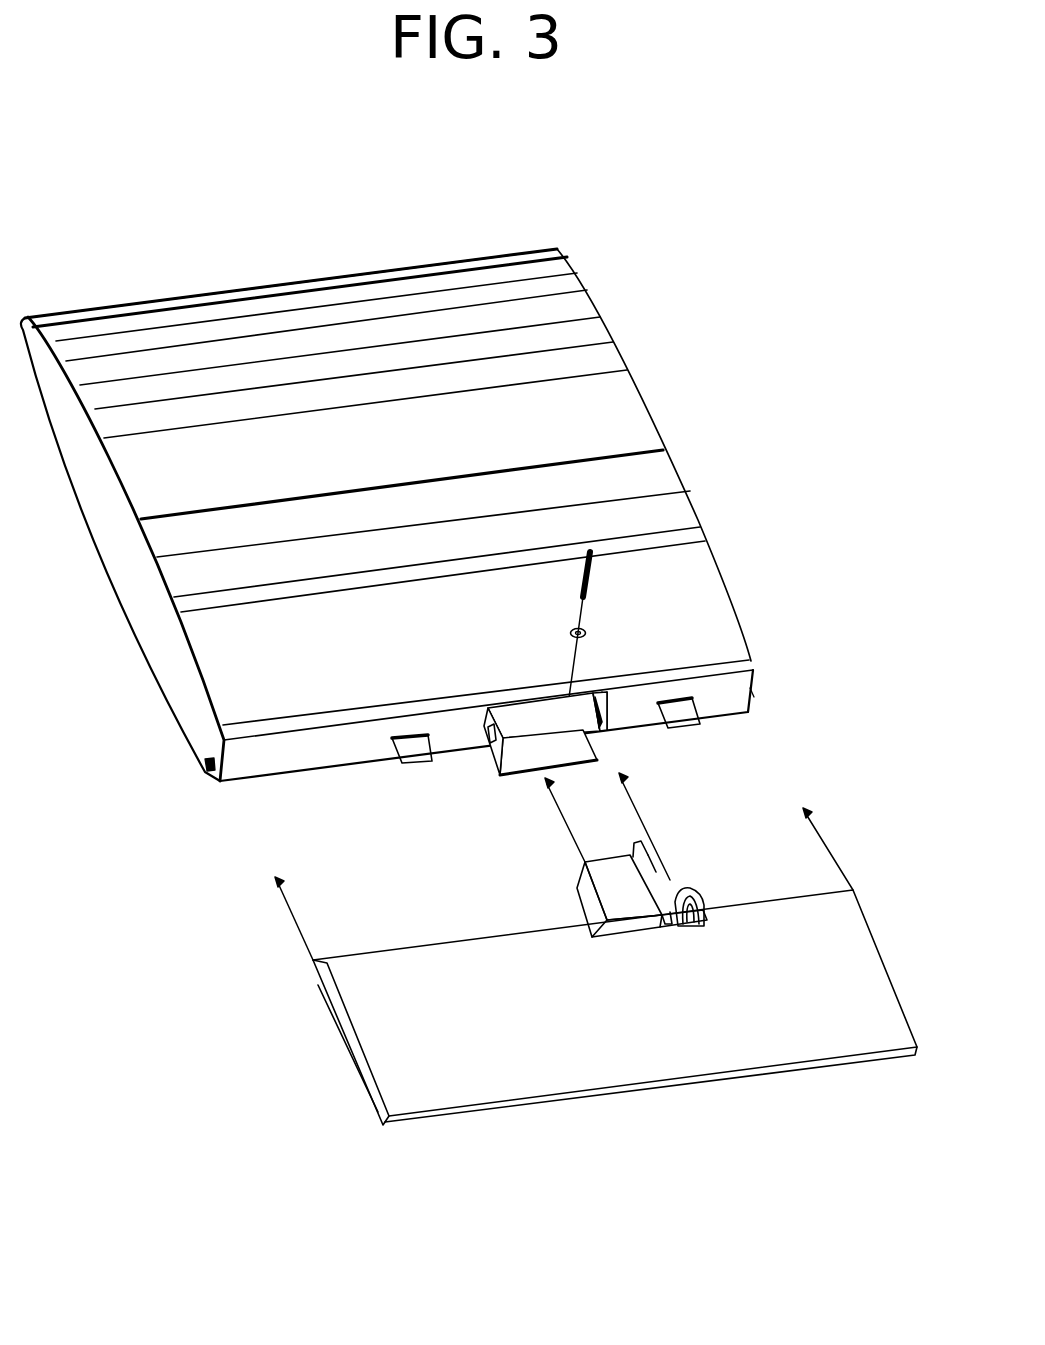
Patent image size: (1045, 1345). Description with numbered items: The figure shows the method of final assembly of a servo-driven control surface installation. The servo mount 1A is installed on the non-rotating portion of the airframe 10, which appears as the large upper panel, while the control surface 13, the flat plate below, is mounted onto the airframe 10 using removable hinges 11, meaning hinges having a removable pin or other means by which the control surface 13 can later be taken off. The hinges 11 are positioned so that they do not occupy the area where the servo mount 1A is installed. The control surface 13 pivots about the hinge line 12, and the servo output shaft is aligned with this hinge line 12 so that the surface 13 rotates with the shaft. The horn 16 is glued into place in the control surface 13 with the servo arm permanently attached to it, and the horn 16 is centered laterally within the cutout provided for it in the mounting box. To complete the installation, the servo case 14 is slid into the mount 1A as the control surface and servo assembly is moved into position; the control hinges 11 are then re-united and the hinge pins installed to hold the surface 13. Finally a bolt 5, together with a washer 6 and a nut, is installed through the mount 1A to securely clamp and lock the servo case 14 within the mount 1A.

The airframe 10 is at (257, 455).
The removable hinges 11 is at (823, 752).
The hinge line 12 is at (205, 764).
The bolt 5 is at (598, 543).
The washer 6 is at (590, 632).
The servo mount 1A is at (150, 941).
The control surface 13 is at (528, 1060).
The servo case 14 is at (486, 1063).
The horn 16 is at (698, 890).